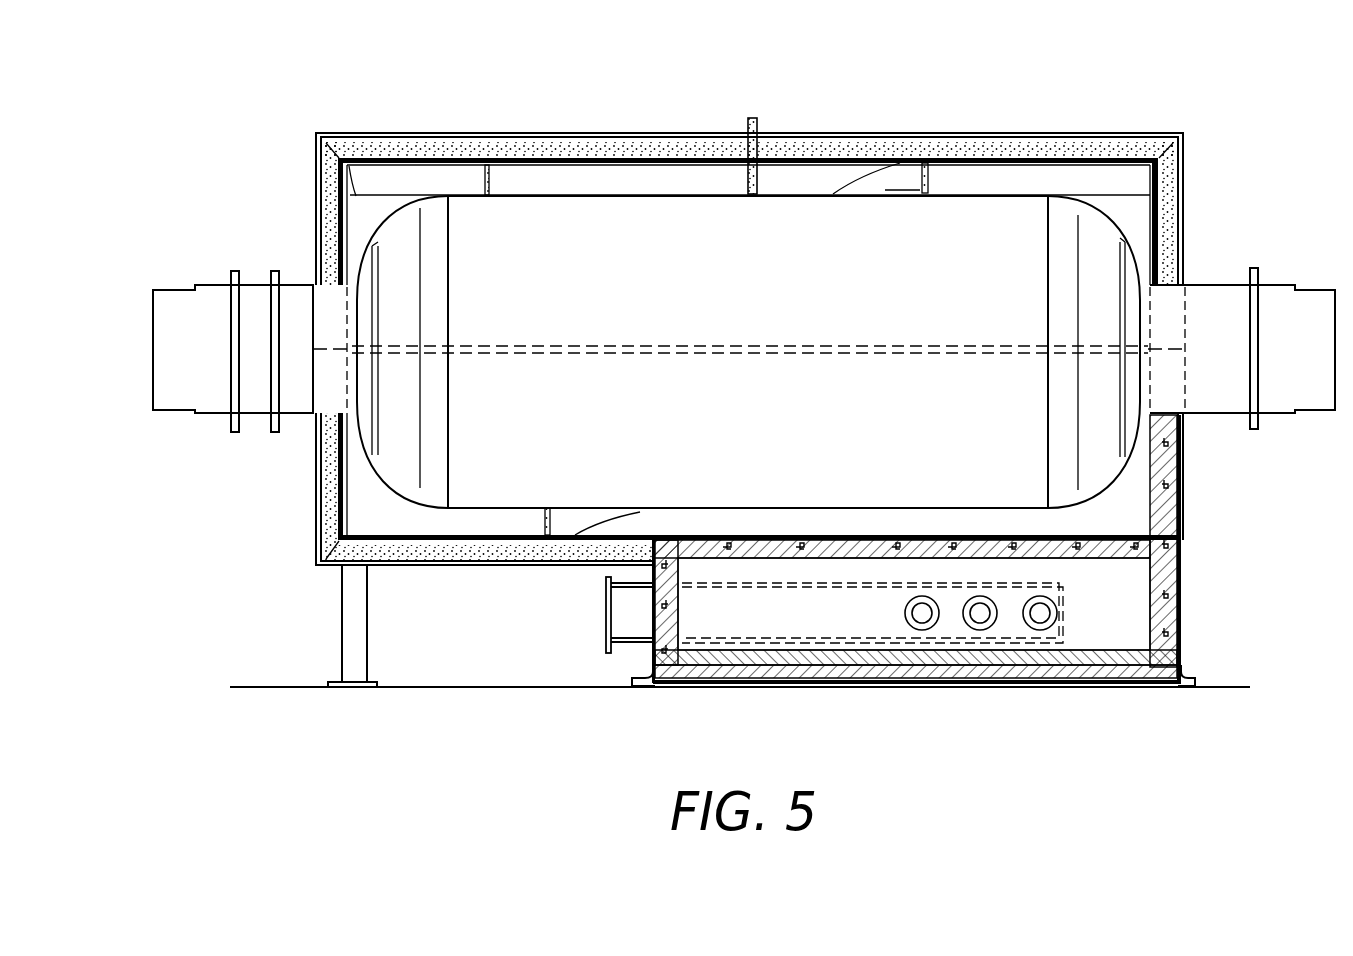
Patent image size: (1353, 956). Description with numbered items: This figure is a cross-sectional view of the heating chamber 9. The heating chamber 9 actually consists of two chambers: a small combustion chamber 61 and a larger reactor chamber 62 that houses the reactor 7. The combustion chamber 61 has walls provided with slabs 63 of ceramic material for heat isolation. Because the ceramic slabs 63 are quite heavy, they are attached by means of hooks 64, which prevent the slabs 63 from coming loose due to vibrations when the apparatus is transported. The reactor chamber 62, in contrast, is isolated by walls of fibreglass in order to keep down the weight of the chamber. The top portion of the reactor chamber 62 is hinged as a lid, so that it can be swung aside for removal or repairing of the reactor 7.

The heating chamber 9 is at (953, 124).
The reactor 7 is at (793, 200).
The reactor chamber 62 is at (368, 503).
The slabs of ceramic material 63 is at (934, 535).
The hooks 64 is at (788, 545).
The combustion chamber 61 is at (1092, 637).